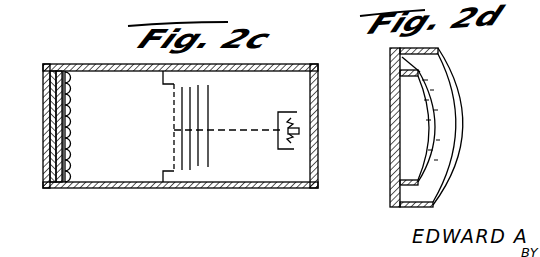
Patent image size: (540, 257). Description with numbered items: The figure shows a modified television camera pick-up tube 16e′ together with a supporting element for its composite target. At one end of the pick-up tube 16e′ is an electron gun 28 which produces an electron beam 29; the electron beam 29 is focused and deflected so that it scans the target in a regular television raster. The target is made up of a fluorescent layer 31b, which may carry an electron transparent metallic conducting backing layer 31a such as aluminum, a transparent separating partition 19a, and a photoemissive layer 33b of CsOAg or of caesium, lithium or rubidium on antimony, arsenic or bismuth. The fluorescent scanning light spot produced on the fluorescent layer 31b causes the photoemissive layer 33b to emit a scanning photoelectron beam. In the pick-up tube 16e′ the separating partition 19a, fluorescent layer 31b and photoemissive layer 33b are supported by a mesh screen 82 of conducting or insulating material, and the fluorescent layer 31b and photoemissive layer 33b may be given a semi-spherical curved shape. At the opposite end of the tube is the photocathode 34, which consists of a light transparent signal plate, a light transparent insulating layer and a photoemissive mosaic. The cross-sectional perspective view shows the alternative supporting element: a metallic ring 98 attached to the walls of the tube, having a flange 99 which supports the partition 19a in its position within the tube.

In FIG. 2C, the photocathode 34 is at (78, 58).
In FIG. 2C, the pick-up tube 16e′ is at (102, 188).
In FIG. 2C, the mesh screen 82 is at (174, 143).
In FIG. 2C, the photoemissive layer 33b is at (183, 170).
In FIG. 2C, the separating partition 19a is at (192, 165).
In FIG. 2D, the separating partition 19a is at (388, 122).
In FIG. 2C, the fluorescent layer 31b is at (198, 152).
In FIG. 2C, the conducting backing layer 31a is at (208, 101).
In FIG. 2C, the electron beam 29 is at (251, 128).
In FIG. 2C, the electron gun 28 is at (302, 117).
In FIG. 2D, the metallic ring 98 is at (452, 83).
In FIG. 2D, the flange 99 is at (390, 208).